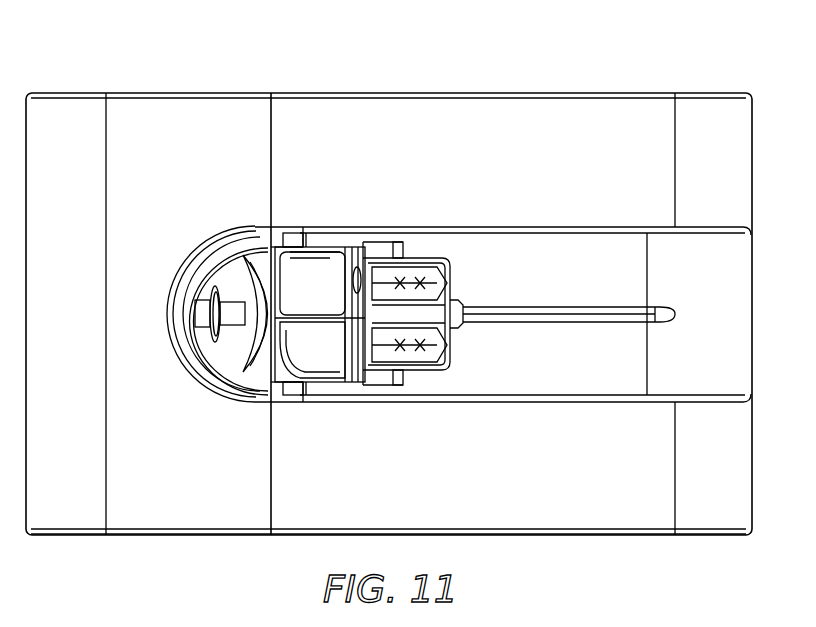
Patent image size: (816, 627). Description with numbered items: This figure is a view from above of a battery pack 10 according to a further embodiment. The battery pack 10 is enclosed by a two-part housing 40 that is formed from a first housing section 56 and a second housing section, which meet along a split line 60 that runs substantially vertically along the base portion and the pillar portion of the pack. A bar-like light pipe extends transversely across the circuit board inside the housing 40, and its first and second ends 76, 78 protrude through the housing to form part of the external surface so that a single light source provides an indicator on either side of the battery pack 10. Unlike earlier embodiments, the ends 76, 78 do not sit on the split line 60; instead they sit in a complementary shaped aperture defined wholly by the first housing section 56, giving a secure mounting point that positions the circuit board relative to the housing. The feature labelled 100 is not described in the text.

The battery pack 10 is at (706, 63).
The two-part housing 40 is at (462, 92).
The first housing section 56 is at (531, 510).
The split line 60 is at (271, 128).
The first end of light pipe 76 is at (300, 393).
The second end of light pipe 78 is at (290, 235).
The guide slot 100 is at (302, 235).